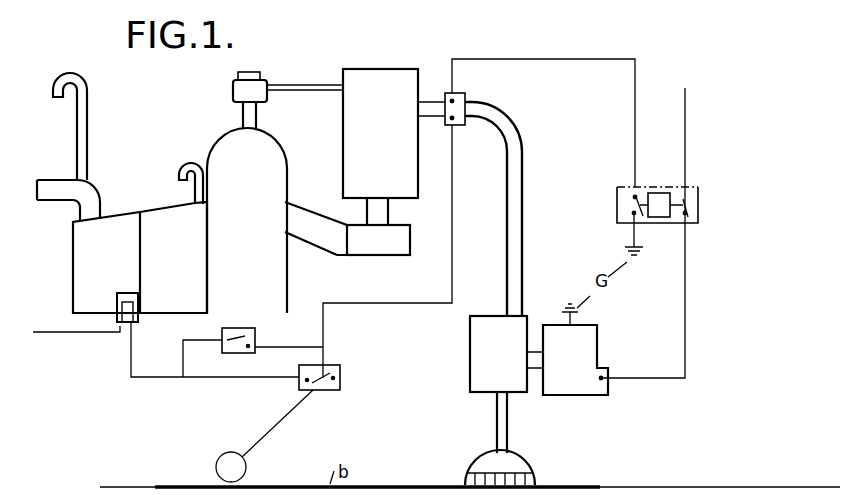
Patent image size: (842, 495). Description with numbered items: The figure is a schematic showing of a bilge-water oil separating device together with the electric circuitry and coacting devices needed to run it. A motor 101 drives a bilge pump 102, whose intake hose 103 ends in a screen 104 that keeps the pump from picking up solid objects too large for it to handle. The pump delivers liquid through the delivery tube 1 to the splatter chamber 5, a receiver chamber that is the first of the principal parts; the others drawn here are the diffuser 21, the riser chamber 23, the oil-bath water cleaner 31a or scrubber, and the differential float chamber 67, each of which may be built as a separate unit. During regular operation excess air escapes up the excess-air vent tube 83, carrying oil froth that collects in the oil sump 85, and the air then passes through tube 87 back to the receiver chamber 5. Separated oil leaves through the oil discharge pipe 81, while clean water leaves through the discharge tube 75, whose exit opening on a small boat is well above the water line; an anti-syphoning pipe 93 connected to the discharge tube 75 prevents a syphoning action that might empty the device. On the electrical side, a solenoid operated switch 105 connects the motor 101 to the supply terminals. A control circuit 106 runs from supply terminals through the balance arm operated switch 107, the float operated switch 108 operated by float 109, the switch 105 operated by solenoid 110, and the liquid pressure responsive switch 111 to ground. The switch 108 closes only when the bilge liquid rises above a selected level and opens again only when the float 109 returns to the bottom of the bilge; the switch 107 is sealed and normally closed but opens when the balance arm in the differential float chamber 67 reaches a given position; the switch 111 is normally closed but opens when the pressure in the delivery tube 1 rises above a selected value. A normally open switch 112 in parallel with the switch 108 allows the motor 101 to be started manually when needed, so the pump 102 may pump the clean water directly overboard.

The delivery tube 1 is at (524, 148).
The splatter chamber 5 is at (380, 82).
The diffuser 21 is at (403, 250).
The riser chamber 23 is at (333, 245).
The oil-bath water cleaner 31a is at (287, 170).
The differential float chamber 67 is at (85, 265).
The discharge tube 75 is at (50, 178).
The oil discharge pipe 81 is at (190, 160).
The excess-air vent tube 83 is at (243, 118).
The oil sump 85 is at (268, 100).
The tube 87 is at (306, 84).
The anti-syphoning pipe 93 is at (87, 112).
The motor 101 is at (558, 395).
The bilge pump 102 is at (470, 392).
The intake hose 103 is at (497, 430).
The screen 104 is at (528, 470).
The solenoid operated switch 105 is at (617, 203).
The control circuit 106 is at (78, 333).
The balance arm operated switch 107 is at (138, 318).
The float operated switch 108 is at (337, 374).
The float 109 is at (216, 470).
The solenoid 110 is at (658, 192).
The liquid pressure responsive switch 111 is at (460, 101).
The manual starting switch 112 is at (255, 337).